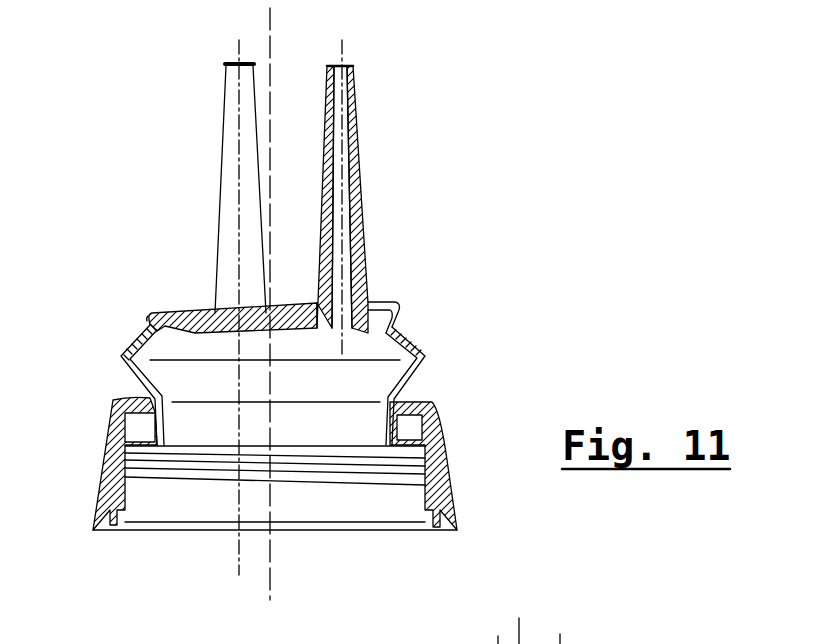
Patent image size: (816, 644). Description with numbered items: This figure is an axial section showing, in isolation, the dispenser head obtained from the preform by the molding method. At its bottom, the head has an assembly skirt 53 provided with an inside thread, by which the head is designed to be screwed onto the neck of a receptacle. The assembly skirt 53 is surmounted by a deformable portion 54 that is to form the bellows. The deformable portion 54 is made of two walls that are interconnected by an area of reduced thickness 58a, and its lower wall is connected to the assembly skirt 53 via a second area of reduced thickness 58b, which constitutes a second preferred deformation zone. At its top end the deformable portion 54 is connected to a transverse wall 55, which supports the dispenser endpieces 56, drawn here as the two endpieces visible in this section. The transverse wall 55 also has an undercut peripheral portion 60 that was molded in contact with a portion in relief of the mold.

The assembly skirt 53 is at (448, 458).
The deformable portion 54 is at (410, 340).
The transverse wall 55 is at (205, 316).
The dispenser endpieces 56 is at (230, 197).
The area of reduced thickness 58a is at (430, 357).
The area of reduced thickness 58b is at (142, 395).
The undercut peripheral portion 60 is at (147, 320).